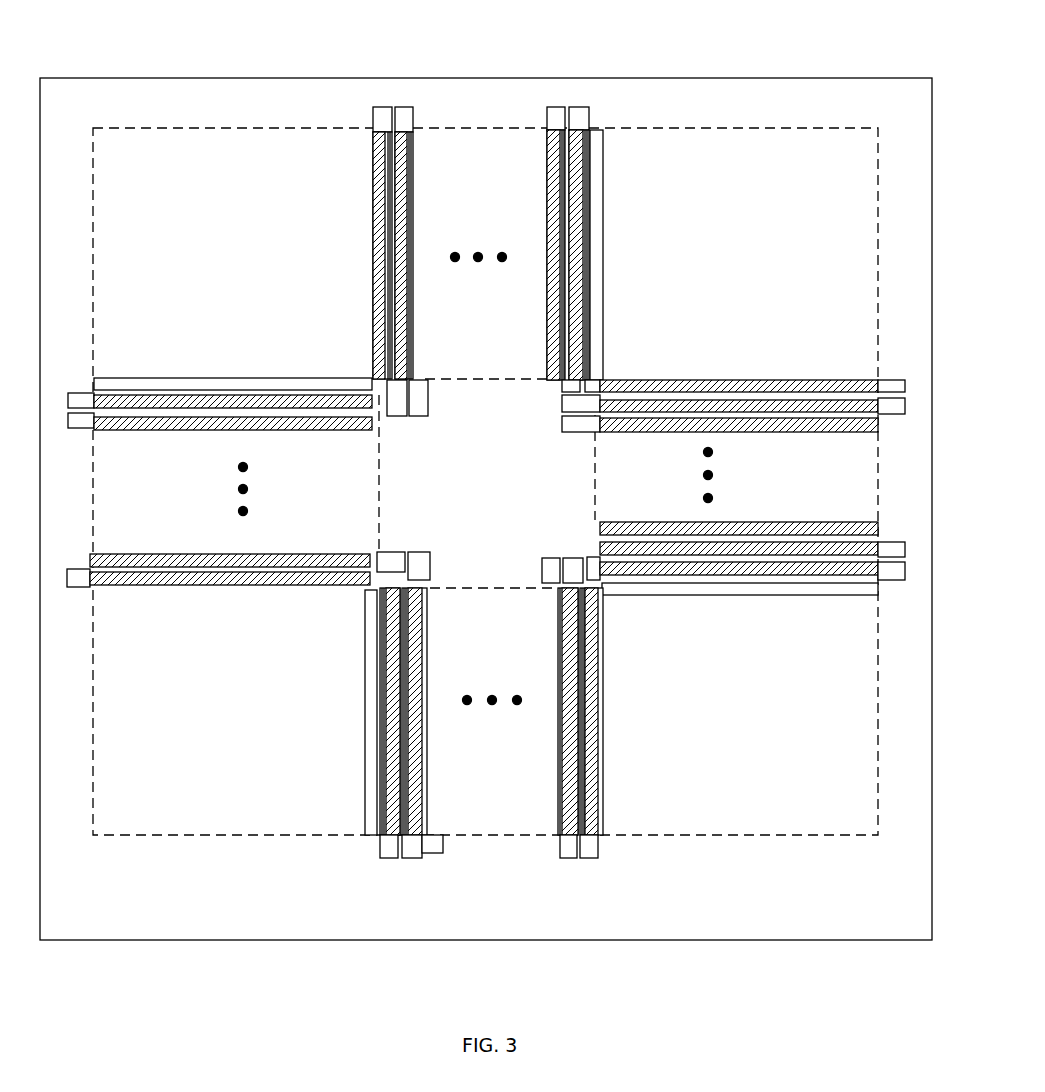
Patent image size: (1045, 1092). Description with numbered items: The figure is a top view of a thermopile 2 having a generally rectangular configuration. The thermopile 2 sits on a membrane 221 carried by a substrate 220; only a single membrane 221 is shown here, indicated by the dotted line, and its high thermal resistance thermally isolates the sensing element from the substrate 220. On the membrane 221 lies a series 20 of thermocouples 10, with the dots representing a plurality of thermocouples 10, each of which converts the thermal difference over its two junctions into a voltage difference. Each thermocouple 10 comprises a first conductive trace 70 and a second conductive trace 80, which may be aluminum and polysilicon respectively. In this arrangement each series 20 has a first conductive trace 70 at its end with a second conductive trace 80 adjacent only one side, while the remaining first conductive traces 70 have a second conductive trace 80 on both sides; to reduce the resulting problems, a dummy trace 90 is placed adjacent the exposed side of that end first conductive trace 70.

The thermopile 2 is at (802, 100).
The thermocouple 10 is at (389, 858).
The series of thermocouples 20 is at (490, 239).
The first conductive trace 70 is at (380, 118).
The second conductive trace 80 is at (374, 188).
The dummy trace 90 is at (600, 266).
The substrate 220 is at (848, 913).
The membrane 221 is at (820, 793).